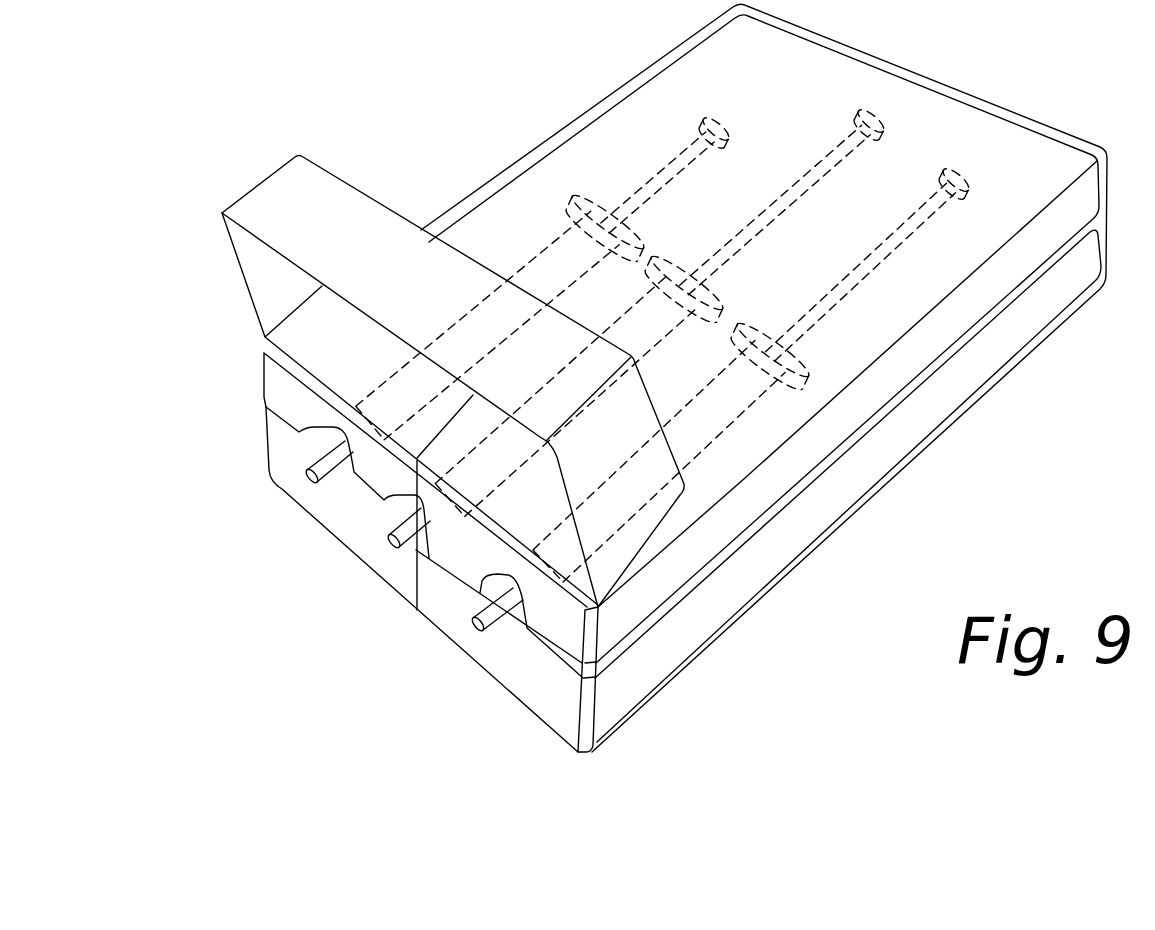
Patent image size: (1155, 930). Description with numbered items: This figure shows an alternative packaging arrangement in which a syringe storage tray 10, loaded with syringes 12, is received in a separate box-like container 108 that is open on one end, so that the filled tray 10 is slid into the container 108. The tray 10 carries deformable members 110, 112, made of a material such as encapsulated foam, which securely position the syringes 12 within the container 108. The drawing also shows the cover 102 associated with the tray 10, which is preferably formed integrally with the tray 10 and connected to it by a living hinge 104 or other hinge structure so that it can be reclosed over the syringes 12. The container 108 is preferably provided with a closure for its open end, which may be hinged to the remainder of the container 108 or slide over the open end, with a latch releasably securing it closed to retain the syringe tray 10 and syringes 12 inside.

The syringe storage tray 10 is at (333, 521).
The syringes 12 is at (538, 224).
The cover 102 is at (266, 190).
The living hinge 104 is at (600, 607).
The box-like container 108 is at (985, 451).
The deformable member 110 is at (268, 375).
The deformable member 112 is at (278, 452).